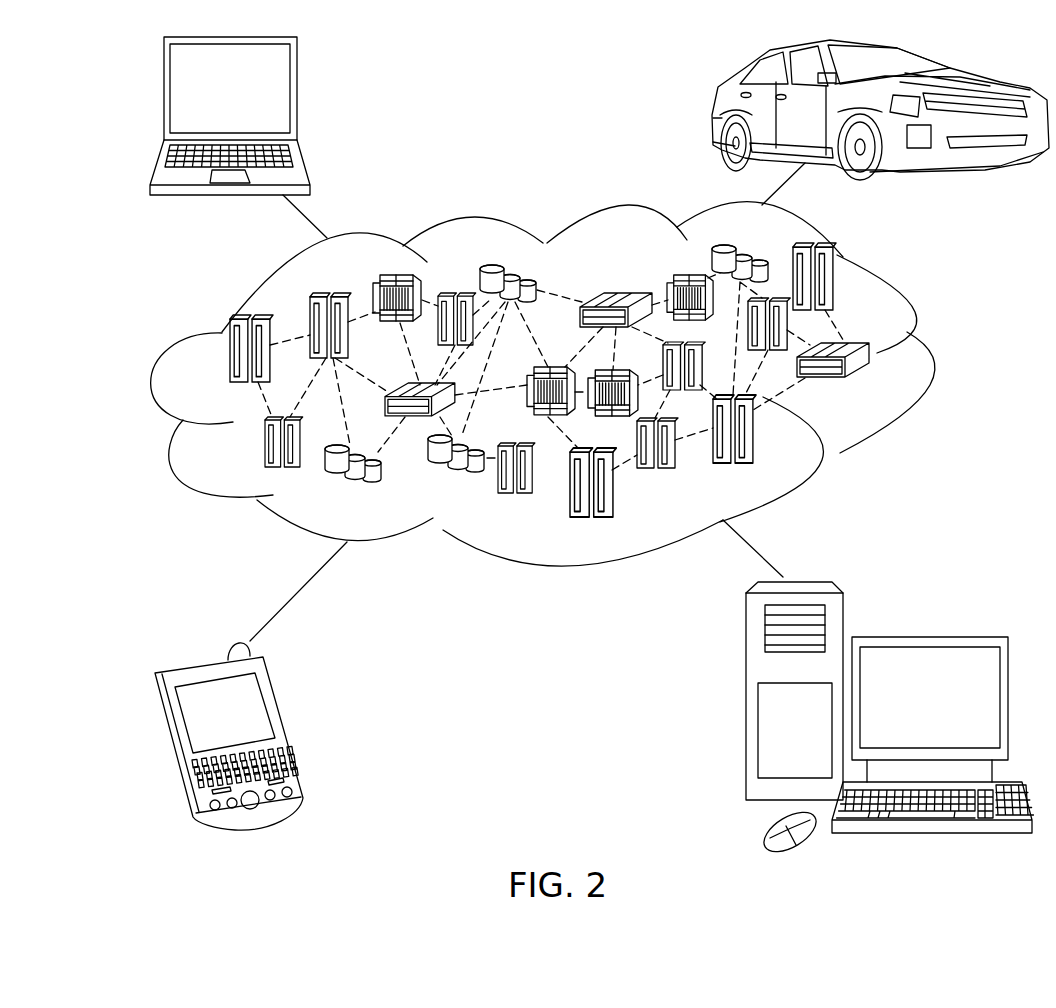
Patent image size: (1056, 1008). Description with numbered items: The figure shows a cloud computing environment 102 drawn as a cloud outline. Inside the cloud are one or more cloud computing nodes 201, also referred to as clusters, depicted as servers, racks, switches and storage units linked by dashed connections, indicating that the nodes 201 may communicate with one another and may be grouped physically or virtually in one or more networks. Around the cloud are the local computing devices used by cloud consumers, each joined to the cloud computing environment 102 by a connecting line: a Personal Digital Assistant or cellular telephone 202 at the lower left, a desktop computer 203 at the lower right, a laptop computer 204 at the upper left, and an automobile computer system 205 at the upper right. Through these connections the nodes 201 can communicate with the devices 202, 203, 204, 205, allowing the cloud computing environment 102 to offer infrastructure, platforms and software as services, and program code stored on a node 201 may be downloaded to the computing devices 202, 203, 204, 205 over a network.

The cloud computing environment 102 is at (928, 358).
The cloud computing nodes 201 is at (886, 394).
The Personal Digital Assistant (PDA) or cellular telephone 202 is at (287, 723).
The desktop computer 203 is at (927, 637).
The laptop computer 204 is at (297, 98).
The automobile computer system 205 is at (718, 112).